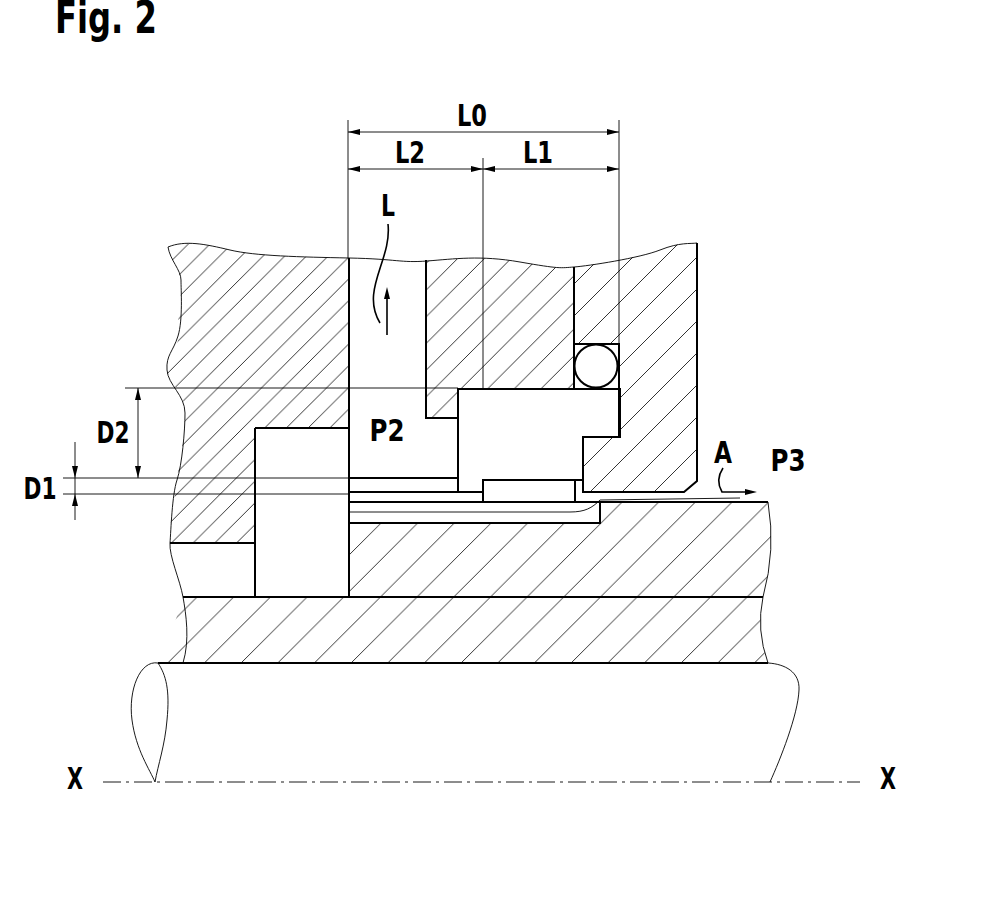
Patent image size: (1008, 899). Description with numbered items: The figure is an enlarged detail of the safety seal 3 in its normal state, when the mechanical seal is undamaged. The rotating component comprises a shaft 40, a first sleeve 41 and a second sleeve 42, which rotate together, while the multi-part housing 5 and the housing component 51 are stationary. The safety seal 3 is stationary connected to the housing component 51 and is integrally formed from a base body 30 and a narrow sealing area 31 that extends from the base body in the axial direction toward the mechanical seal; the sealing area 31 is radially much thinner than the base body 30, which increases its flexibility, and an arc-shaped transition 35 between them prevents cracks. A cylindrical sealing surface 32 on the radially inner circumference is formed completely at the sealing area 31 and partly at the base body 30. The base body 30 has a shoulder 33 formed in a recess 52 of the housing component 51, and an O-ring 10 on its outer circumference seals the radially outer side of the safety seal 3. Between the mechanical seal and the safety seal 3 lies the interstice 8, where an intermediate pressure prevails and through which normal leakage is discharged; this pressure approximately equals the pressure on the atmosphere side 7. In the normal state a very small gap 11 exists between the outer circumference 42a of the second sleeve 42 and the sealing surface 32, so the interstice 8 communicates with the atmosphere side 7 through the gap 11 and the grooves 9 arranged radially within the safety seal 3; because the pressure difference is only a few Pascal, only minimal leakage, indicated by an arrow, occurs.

The safety seal 3 is at (507, 375).
The housing 5 is at (276, 312).
The atmosphere side 7 is at (826, 387).
The interstice 8 is at (349, 512).
The grooves 9 is at (528, 520).
The O-ring 10 is at (603, 364).
The gap 11 is at (387, 500).
The base body 30 is at (585, 408).
The sealing area 31 is at (418, 484).
The sealing surface 32 is at (464, 505).
The shoulder 33 is at (603, 435).
The arc-shaped transition 35 is at (455, 480).
The shaft 40 is at (763, 705).
The first sleeve 41 is at (737, 633).
The second sleeve 42 is at (732, 550).
The outer circumference of the second sleeve 42a is at (537, 488).
The housing component 51 is at (659, 292).
The recess 52 is at (597, 430).